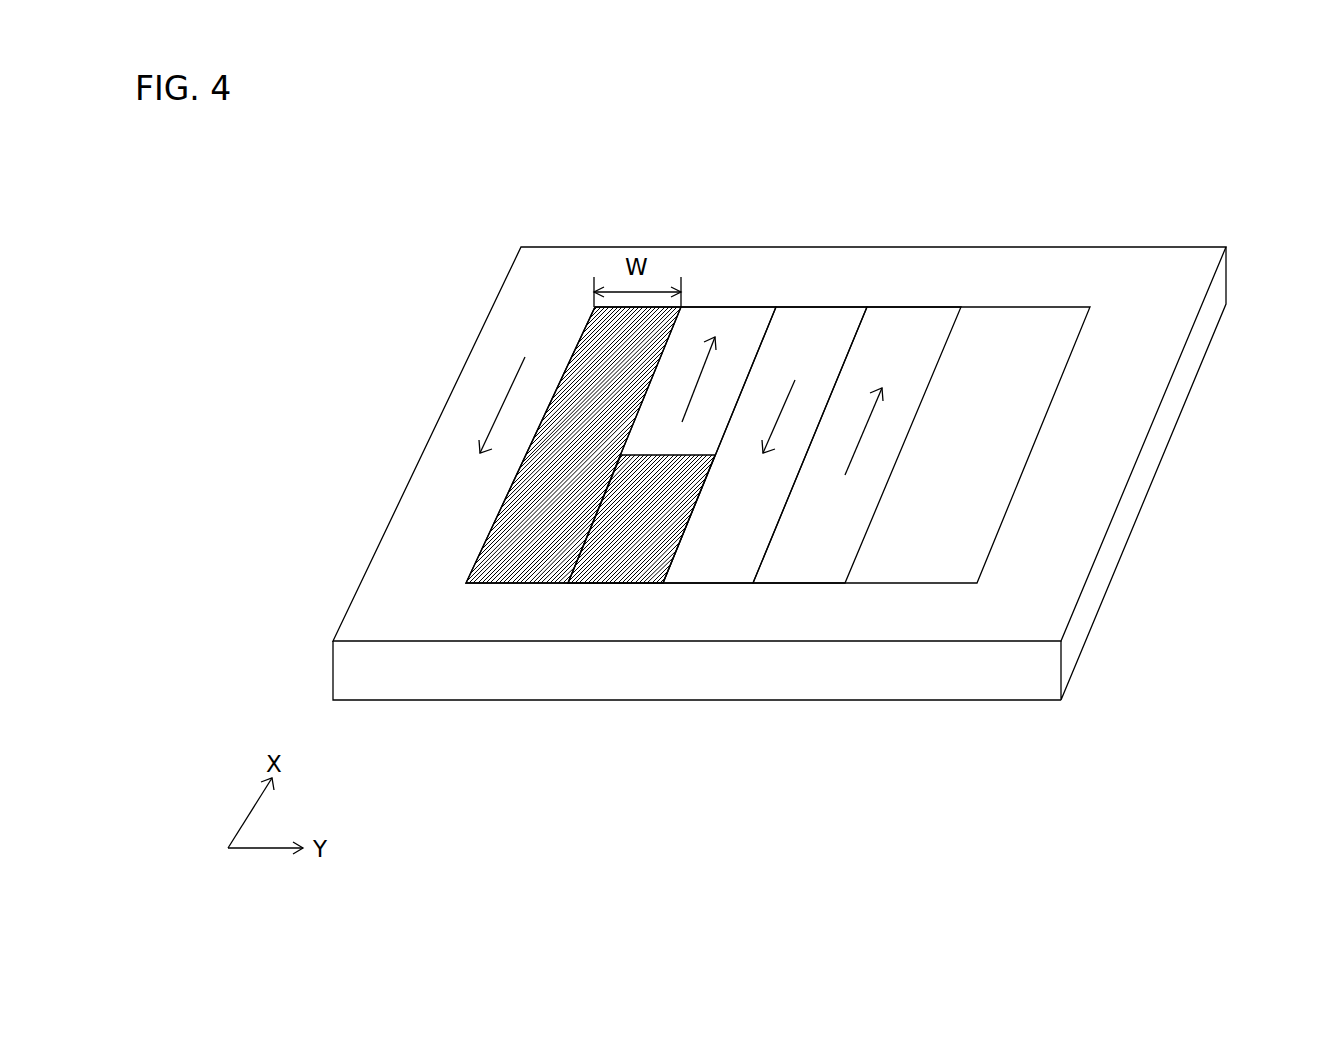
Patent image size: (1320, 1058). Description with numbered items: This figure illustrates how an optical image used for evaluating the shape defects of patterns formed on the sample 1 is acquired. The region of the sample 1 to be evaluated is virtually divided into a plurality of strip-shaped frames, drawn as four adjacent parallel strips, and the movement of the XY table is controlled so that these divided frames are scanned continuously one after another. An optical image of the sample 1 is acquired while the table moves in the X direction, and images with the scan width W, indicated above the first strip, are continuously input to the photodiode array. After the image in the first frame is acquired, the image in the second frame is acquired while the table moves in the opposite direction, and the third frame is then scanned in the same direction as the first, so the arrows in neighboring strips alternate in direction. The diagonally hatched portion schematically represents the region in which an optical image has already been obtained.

The sample 1 is at (1165, 509).